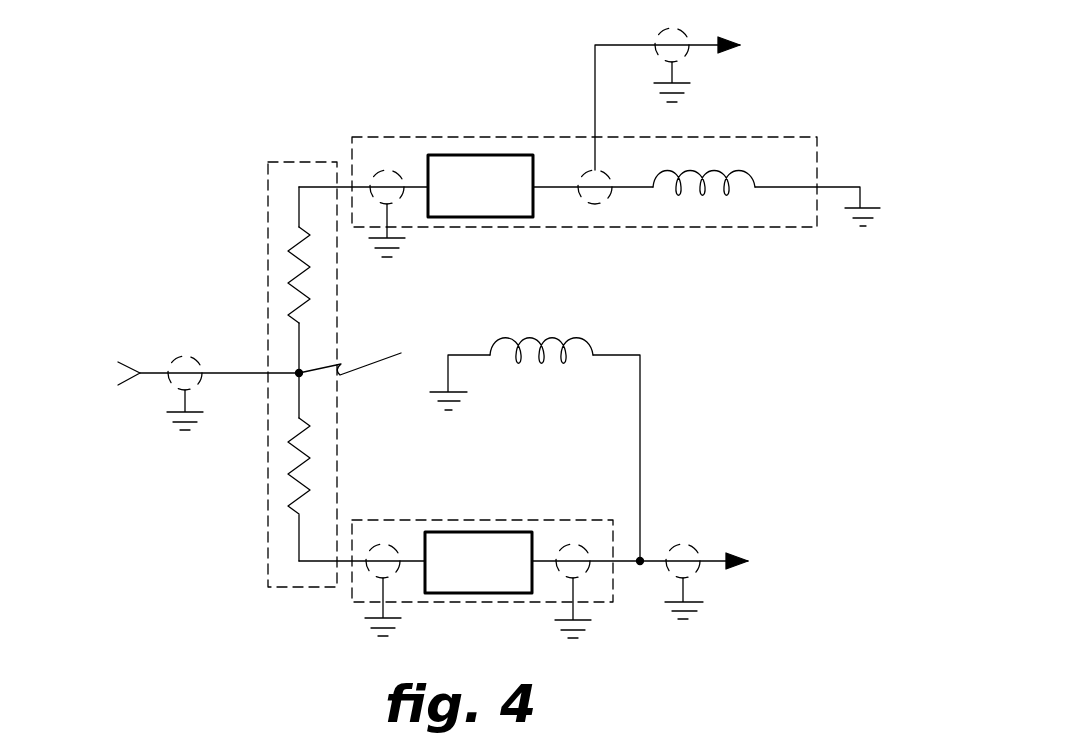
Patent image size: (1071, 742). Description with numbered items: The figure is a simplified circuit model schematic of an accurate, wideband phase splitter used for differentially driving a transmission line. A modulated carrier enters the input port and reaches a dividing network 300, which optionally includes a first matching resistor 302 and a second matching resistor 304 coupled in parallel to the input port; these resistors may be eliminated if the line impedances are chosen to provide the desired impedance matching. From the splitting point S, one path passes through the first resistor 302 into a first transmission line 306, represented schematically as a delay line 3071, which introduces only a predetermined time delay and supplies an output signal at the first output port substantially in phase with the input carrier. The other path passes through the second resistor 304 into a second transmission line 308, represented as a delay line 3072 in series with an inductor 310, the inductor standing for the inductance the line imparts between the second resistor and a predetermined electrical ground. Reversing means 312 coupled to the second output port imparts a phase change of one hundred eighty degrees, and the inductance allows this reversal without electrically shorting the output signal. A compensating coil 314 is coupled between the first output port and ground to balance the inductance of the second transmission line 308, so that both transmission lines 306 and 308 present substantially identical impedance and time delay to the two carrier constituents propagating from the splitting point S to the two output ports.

The dividing network 300 is at (268, 212).
The first matching resistor 302 is at (292, 473).
The second matching resistor 304 is at (290, 255).
The first transmission line 306 is at (372, 520).
The delay line 3071 is at (505, 532).
The delay line 3072 is at (478, 155).
The second transmission line 308 is at (364, 137).
The inductor 310 is at (730, 200).
The reversing means 312 is at (595, 206).
The compensating coil 314 is at (508, 337).
The splitting point S is at (359, 356).